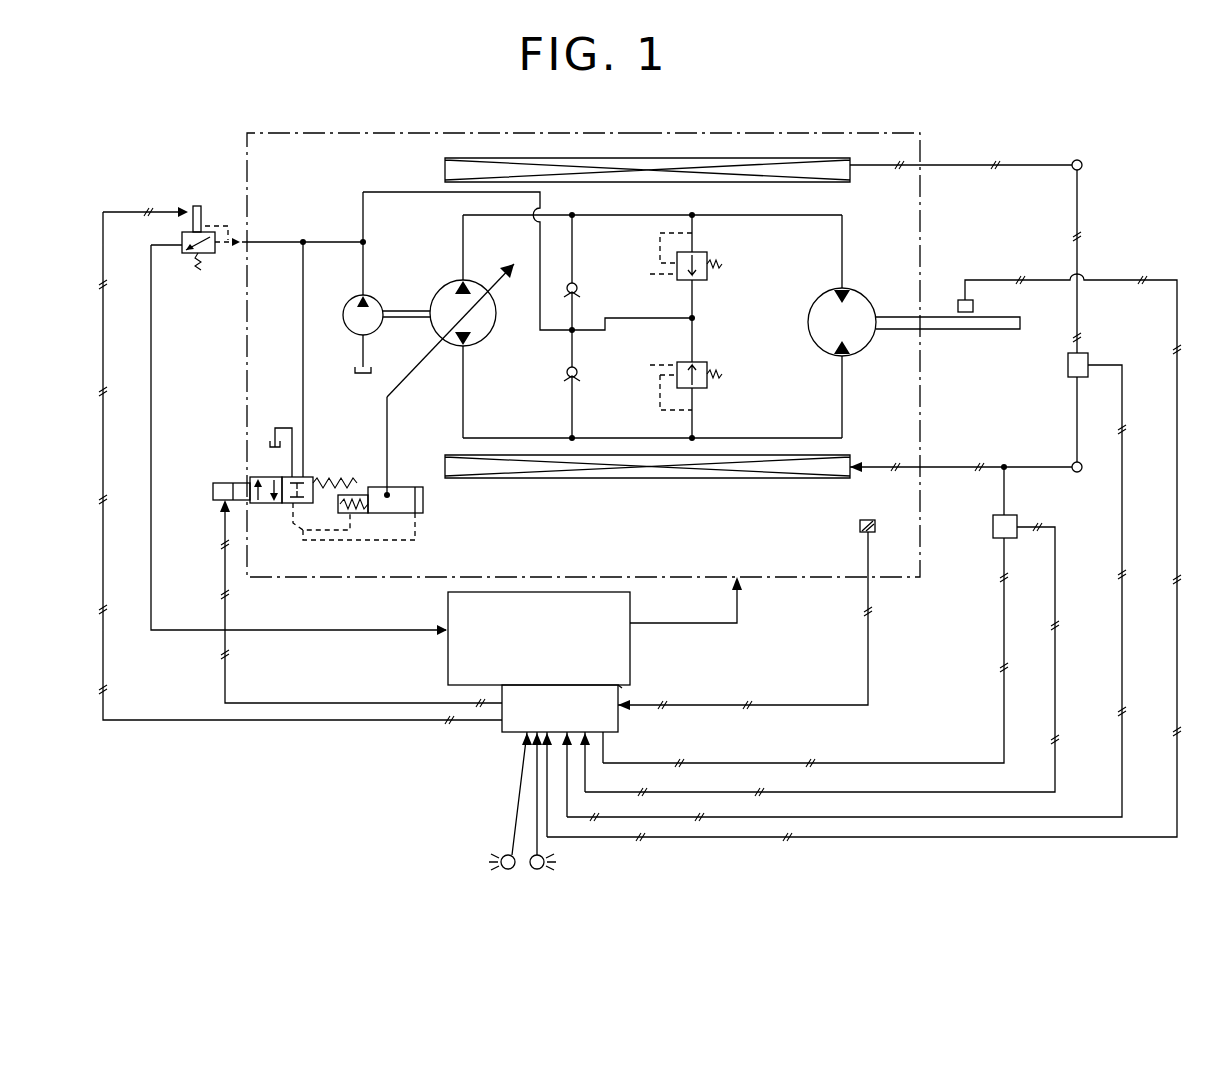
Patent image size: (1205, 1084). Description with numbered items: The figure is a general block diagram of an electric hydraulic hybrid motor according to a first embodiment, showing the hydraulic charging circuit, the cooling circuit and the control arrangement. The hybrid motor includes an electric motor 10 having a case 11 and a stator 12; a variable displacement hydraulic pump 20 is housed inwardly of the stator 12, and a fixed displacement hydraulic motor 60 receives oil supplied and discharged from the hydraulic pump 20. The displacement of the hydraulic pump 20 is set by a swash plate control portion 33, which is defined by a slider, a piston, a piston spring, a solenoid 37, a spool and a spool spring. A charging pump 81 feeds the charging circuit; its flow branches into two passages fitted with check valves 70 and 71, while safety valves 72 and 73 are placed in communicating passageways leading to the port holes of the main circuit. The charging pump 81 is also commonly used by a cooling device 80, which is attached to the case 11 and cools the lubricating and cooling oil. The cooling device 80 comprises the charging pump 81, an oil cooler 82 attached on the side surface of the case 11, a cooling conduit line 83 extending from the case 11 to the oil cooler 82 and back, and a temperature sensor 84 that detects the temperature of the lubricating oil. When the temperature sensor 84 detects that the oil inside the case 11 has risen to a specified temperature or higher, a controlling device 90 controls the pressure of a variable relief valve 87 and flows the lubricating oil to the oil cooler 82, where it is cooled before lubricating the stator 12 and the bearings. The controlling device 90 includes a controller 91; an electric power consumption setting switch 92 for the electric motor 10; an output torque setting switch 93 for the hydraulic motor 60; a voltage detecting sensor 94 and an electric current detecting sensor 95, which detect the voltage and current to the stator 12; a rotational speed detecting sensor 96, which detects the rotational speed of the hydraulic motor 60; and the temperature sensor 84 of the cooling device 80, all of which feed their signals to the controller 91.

The electric motor 10 is at (588, 134).
The case 11 is at (695, 133).
The stator 12 is at (825, 165).
The variable displacement hydraulic pump 20 is at (432, 265).
The swash plate control portion 33 is at (423, 500).
The solenoid 37 is at (224, 480).
The fixed displacement hydraulic motor 60 is at (857, 282).
The check valve 70 is at (580, 356).
The check valve 71 is at (580, 280).
The safety valve 72 is at (707, 256).
The safety valve 73 is at (707, 384).
The cooling device 80 is at (575, 759).
The charging pump 81 is at (353, 320).
The oil cooler 82 is at (448, 645).
The cooling conduit line 83 is at (312, 632).
The temperature sensor 84 is at (858, 526).
The variable relief valve 87 is at (198, 208).
The controlling device 90 is at (622, 728).
The controller 91 is at (620, 688).
The electric power consumption setting switch 92 is at (502, 870).
The output torque setting switch 93 is at (544, 870).
The voltage detecting sensor 94 is at (1089, 355).
The electric current detecting sensor 95 is at (1017, 517).
The rotational speed detecting sensor 96 is at (974, 306).